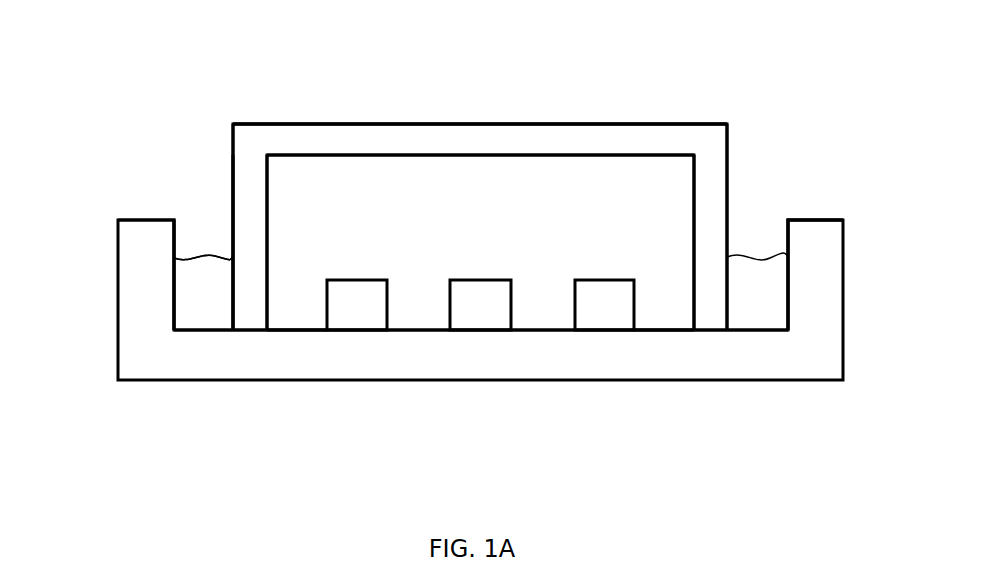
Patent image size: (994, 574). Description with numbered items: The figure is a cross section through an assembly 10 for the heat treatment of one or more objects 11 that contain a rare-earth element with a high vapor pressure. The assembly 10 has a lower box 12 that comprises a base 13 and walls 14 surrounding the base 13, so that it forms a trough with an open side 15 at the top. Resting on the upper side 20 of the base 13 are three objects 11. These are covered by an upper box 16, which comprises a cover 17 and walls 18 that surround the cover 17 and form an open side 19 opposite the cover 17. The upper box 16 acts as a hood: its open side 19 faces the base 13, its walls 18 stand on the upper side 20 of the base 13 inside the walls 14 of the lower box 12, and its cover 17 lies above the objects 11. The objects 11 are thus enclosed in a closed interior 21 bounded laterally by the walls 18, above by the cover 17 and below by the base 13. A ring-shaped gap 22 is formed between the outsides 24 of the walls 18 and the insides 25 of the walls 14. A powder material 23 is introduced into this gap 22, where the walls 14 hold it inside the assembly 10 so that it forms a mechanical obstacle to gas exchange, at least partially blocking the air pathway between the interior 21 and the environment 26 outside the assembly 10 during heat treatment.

The assembly 10 is at (333, 116).
The object 11 is at (345, 316).
The lower box 12 is at (852, 278).
The base 13 is at (541, 357).
The walls 14 is at (145, 250).
The open side 15 is at (775, 208).
The upper box 16 is at (733, 118).
The cover 17 is at (465, 138).
The walls 18 is at (245, 165).
The open side 19 is at (303, 308).
The upper side 20 is at (662, 324).
The interior 21 is at (459, 227).
The gap 22 is at (216, 238).
The powder material 23 is at (205, 312).
The outsides 24 is at (233, 190).
The insides 25 is at (181, 229).
The environment 26 is at (632, 42).